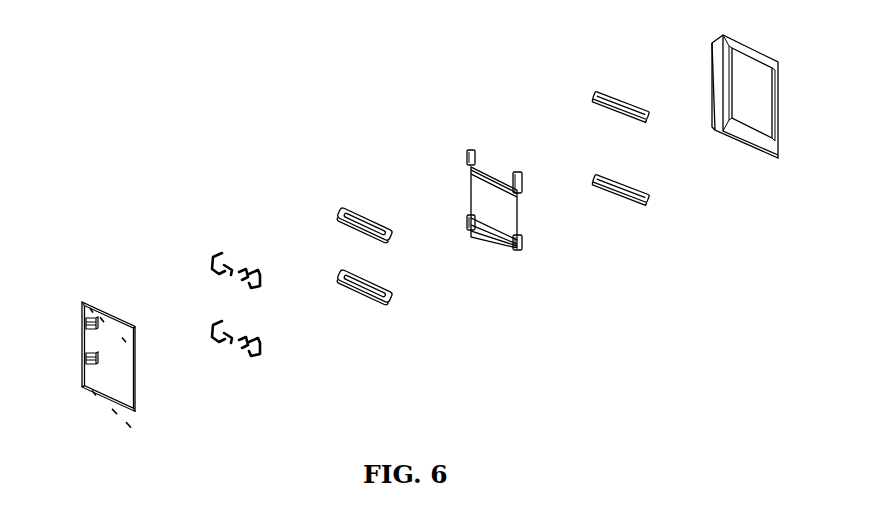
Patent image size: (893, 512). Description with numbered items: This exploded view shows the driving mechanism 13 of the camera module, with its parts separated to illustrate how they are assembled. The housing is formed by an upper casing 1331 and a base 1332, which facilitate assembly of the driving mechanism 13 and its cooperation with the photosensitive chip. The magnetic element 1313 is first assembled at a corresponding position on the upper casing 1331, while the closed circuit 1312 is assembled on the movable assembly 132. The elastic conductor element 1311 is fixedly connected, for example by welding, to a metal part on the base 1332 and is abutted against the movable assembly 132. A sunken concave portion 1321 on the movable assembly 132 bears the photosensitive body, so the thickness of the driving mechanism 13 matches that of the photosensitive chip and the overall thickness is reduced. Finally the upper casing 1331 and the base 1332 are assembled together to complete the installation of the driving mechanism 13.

The driving mechanism 13 is at (146, 85).
The elastic conductor element 1311 is at (220, 257).
The closed circuit 1312 is at (352, 211).
The magnetic element 1313 is at (596, 95).
The movable assembly 132 is at (500, 173).
The concave portion 1321 is at (493, 202).
The upper casing 1331 is at (716, 60).
The base 1332 is at (110, 323).